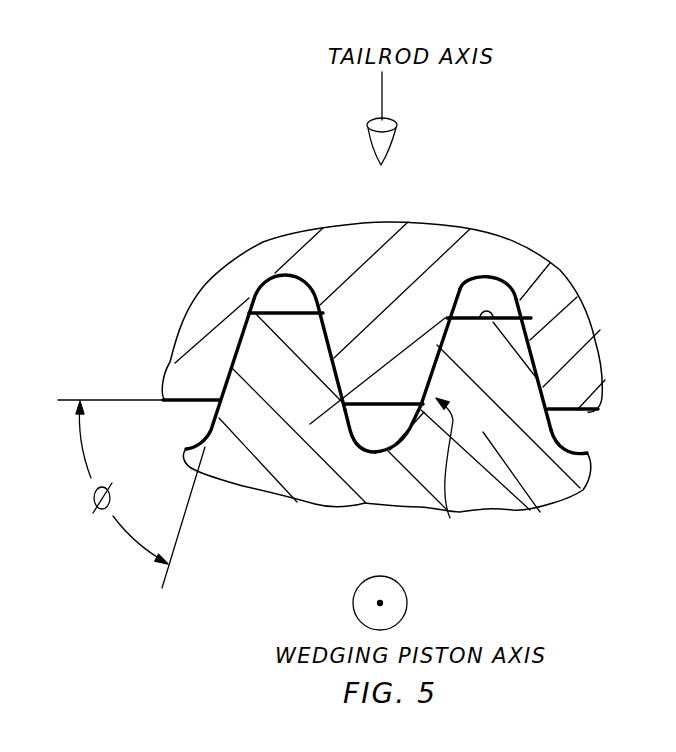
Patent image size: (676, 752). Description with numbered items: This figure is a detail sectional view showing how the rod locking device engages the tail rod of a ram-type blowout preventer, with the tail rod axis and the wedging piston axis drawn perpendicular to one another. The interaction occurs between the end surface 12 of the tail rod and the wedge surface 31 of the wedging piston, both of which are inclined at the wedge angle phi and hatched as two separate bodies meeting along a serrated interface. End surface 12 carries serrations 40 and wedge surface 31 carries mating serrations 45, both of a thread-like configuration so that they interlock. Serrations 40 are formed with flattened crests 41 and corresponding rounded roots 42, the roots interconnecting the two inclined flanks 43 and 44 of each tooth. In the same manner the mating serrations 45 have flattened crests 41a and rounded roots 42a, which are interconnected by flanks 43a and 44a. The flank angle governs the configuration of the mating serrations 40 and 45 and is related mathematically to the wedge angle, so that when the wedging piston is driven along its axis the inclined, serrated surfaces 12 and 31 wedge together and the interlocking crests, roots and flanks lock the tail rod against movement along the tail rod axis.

The end surface 12 is at (310, 247).
The wedge surface 31 is at (520, 502).
The serrations 40 is at (340, 259).
The flattened crests 41 is at (348, 404).
The flattened crests 41a is at (490, 320).
The rounded roots 42 is at (489, 282).
The rounded roots 42a is at (347, 440).
The flank 43 is at (446, 344).
The flank 43a is at (425, 403).
The flank 44 is at (528, 330).
The flank 44a is at (557, 412).
The mating serrations 45 is at (456, 469).